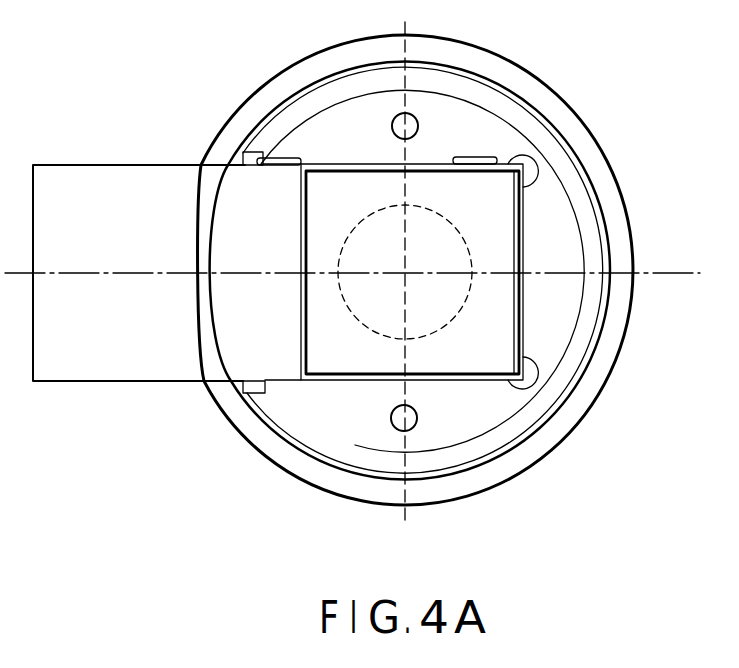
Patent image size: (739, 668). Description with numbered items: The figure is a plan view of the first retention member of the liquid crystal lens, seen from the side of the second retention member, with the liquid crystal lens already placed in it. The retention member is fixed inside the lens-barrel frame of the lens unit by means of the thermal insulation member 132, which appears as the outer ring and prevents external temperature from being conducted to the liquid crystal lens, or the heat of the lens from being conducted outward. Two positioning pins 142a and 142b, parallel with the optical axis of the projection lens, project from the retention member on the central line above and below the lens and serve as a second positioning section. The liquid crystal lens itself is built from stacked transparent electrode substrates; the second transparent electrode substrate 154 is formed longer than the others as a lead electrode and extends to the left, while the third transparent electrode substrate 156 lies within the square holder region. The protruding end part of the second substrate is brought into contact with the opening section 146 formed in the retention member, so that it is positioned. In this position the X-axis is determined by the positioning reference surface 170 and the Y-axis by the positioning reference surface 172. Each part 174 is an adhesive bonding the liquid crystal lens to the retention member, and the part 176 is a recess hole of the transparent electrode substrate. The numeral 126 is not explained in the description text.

The housing 126 is at (562, 410).
The thermal insulation member 132 is at (289, 63).
The positioning pin 142a is at (415, 117).
The positioning pin 142b is at (390, 427).
The opening section 146 is at (530, 236).
The second transparent electrode substrate 154 is at (128, 363).
The third transparent electrode substrate 156 is at (330, 345).
The positioning reference surface 170 is at (522, 318).
The positioning reference surface 172 is at (465, 381).
The adhesive 174 is at (313, 158).
The recess hole 176 is at (530, 147).